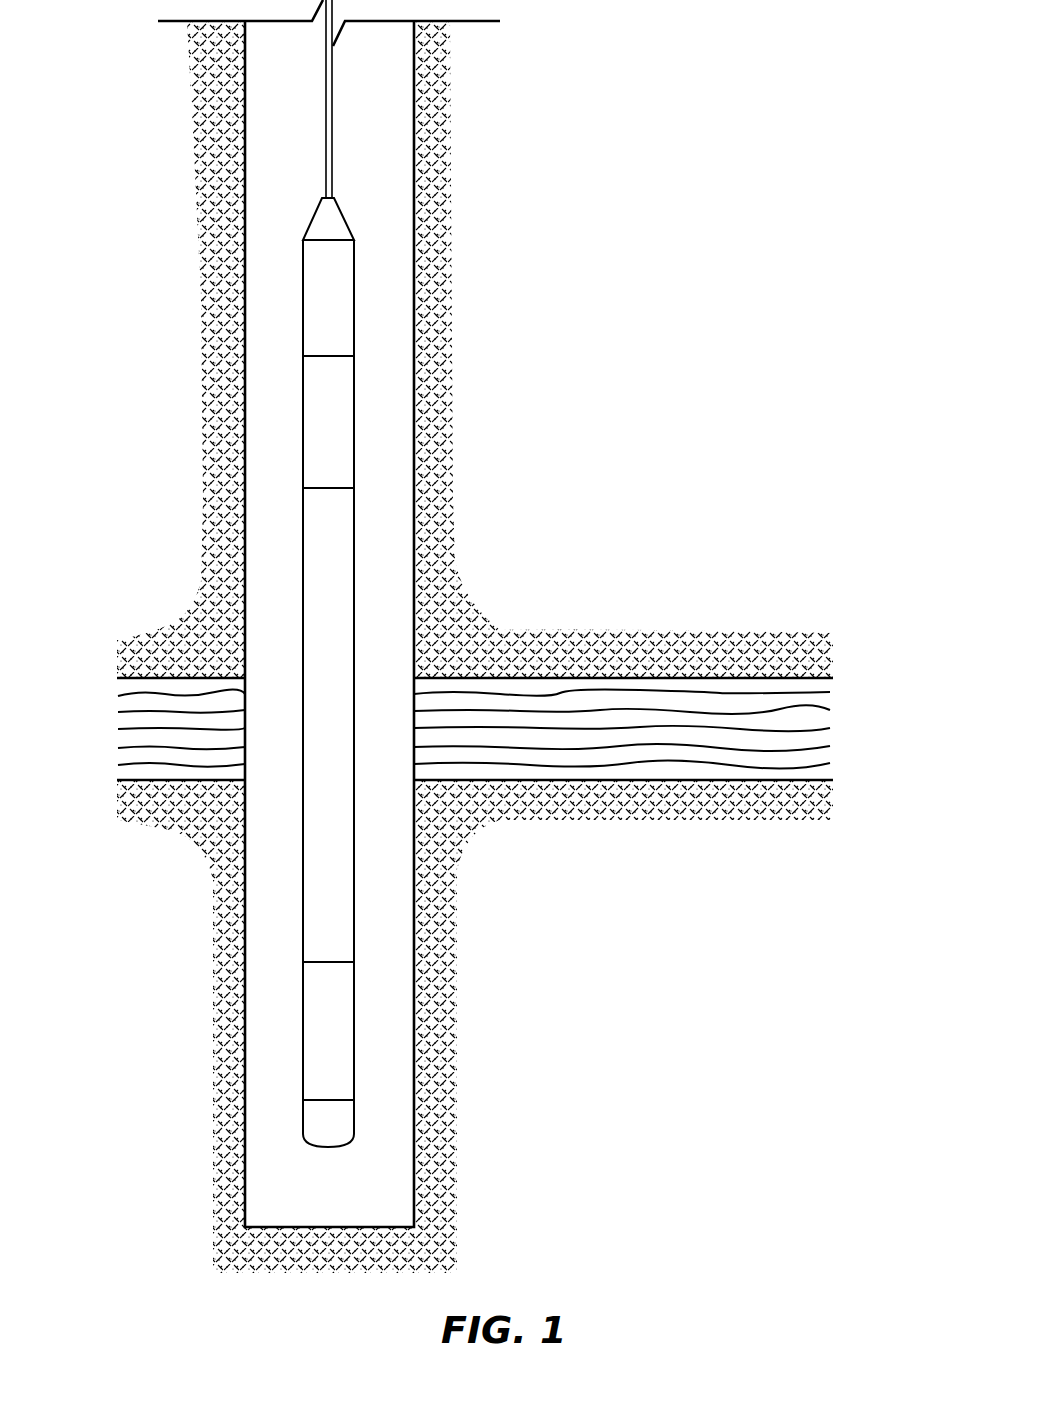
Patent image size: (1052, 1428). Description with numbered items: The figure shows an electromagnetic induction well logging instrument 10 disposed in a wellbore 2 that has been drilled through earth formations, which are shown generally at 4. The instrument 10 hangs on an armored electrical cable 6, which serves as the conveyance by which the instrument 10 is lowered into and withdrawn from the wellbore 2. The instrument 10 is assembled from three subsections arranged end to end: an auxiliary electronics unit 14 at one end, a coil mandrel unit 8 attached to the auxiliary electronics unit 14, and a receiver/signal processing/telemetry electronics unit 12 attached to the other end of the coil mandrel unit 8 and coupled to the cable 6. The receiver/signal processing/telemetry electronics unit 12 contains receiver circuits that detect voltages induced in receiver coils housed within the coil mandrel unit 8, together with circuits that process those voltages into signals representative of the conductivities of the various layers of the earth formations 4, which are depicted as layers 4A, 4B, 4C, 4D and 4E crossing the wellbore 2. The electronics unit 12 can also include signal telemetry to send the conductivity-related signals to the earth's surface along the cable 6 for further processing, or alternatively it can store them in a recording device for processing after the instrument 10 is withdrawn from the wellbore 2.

The wellbore 2 is at (384, 115).
The earth formations 4 is at (485, 736).
The layer of the earth formations 4A is at (825, 687).
The layer of the earth formations 4B is at (826, 710).
The layer of the earth formations 4C is at (826, 727).
The layer of the earth formations 4D is at (826, 753).
The layer of the earth formations 4E is at (826, 771).
The armored electrical cable 6 is at (328, 130).
The coil mandrel unit 8 is at (313, 698).
The electromagnetic induction well logging instrument 10 is at (367, 328).
The receiver/signal processing/telemetry electronics unit 12 is at (313, 430).
The auxiliary electronics unit 14 is at (316, 1030).